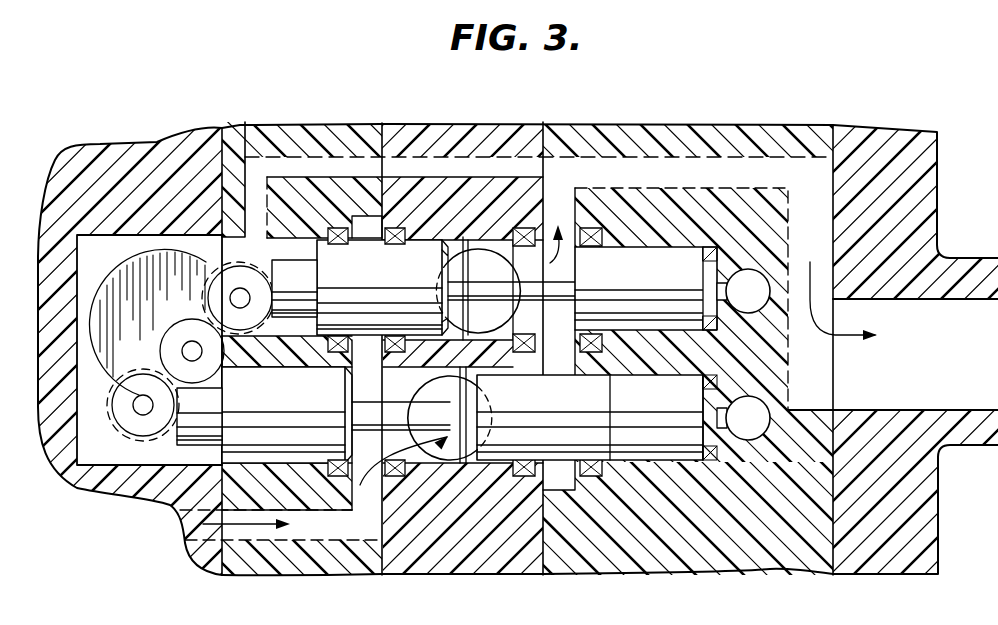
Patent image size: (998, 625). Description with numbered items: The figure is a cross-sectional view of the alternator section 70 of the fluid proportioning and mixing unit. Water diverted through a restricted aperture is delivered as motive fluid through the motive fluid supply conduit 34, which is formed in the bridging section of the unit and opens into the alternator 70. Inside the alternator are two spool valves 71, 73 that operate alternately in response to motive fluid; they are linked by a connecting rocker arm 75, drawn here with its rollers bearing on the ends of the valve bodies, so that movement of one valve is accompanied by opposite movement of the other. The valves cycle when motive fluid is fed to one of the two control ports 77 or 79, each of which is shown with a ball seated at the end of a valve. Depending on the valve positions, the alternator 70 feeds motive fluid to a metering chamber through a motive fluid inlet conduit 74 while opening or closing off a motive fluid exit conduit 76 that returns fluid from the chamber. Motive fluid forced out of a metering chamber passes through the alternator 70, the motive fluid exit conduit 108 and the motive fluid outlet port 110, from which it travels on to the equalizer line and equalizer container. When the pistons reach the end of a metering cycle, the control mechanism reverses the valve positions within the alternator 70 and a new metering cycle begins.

The alternator section 70 is at (730, 580).
The spool valve 71 is at (643, 262).
The spool valve 73 is at (590, 407).
The motive fluid inlet conduit 74 is at (440, 445).
The connecting rocker arm 75 is at (110, 413).
The motive fluid exit conduit 76 is at (480, 270).
The control port 77 is at (760, 283).
The control port 79 is at (760, 417).
The motive fluid exit conduit 108 is at (822, 359).
The motive fluid outlet port 110 is at (972, 359).
The motive fluid supply conduit 34 is at (198, 532).